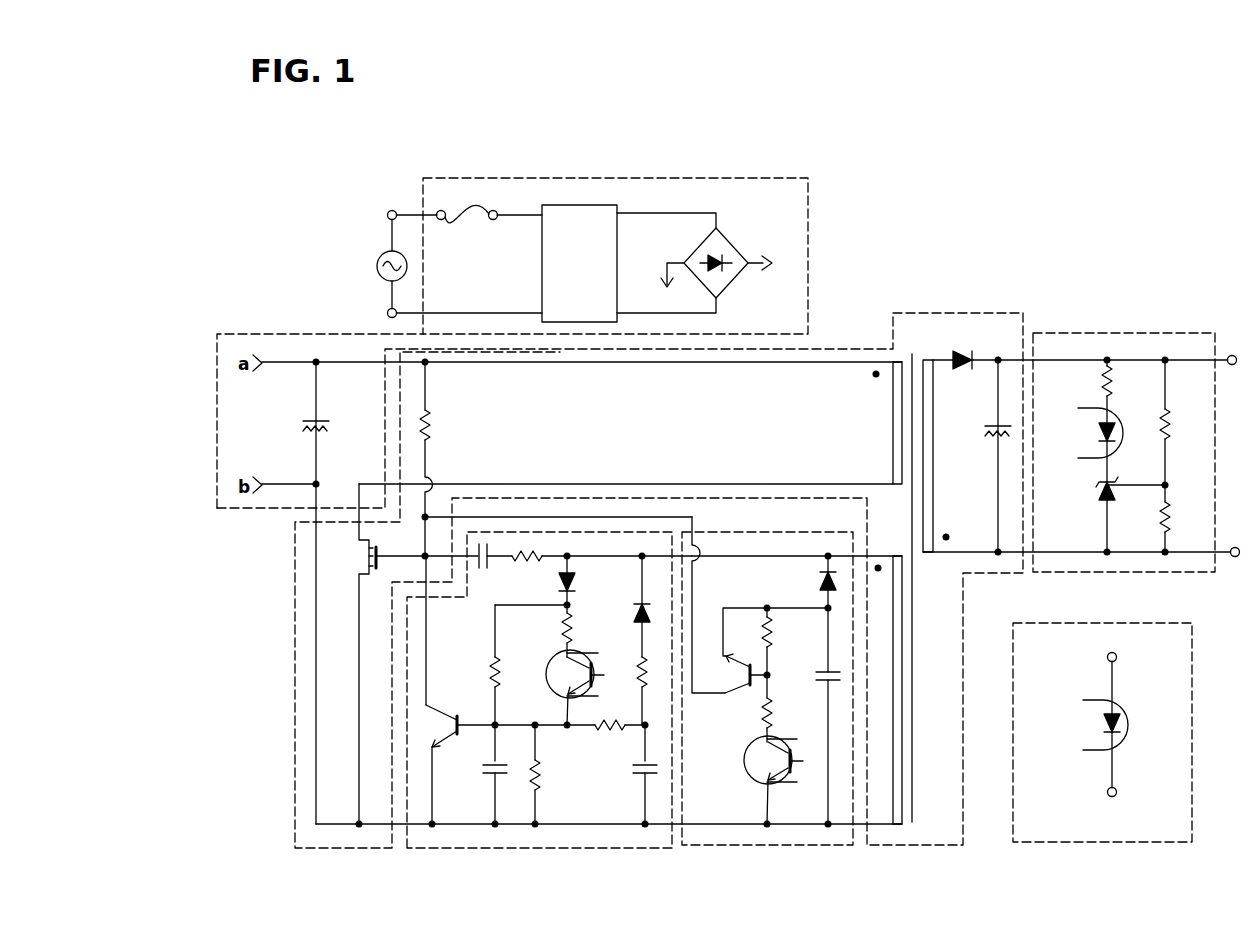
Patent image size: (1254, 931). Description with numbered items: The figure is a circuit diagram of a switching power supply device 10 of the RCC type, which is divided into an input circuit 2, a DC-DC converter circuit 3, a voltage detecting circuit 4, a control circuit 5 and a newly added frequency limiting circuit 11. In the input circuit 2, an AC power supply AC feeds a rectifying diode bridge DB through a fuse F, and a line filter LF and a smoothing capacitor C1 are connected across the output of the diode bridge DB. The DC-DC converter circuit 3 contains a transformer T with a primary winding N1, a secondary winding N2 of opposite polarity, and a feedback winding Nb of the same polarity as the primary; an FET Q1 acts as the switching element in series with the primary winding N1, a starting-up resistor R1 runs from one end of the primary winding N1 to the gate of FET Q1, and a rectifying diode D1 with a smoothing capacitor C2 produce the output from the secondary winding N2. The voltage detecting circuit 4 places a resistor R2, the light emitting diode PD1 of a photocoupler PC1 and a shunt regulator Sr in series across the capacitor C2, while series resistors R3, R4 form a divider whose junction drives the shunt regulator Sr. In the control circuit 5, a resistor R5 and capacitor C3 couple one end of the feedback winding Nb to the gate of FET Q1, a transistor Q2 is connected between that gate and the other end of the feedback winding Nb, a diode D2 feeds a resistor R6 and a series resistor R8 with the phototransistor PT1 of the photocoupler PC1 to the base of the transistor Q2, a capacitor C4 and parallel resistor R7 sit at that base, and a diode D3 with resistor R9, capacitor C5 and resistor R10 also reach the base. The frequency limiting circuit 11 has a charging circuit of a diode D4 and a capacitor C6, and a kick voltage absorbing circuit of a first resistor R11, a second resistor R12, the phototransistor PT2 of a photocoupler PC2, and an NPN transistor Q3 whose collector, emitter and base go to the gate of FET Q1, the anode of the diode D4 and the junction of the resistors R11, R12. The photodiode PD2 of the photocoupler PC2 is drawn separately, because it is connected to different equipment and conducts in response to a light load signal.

The input circuit 2 is at (641, 173).
The DC-DC converter circuit 3 is at (973, 310).
The voltage detecting circuit 4 is at (1149, 330).
The control circuit 5 is at (530, 878).
The switching power supply device 10 is at (849, 262).
The frequency limiting circuit 11 is at (776, 878).
The AC power supply AC is at (375, 264).
The fuse F is at (467, 229).
The line filter LF is at (579, 263).
The rectifying diode bridge DB is at (703, 252).
The smoothing capacitor C1 is at (327, 593).
The starting-up resistor R1 is at (444, 459).
The FET Q1 is at (375, 654).
The transformer T is at (910, 581).
The primary winding N1 is at (880, 423).
The secondary winding N2 is at (943, 456).
The feedback winding Nb is at (911, 690).
The rectifying diode D1 is at (965, 349).
The smoothing capacitor C2 is at (989, 456).
The photocoupler PC1 is at (804, 547).
The light emitting diode PD1 is at (1086, 445).
The phototransistor PT1 is at (575, 687).
The resistor R2 is at (1114, 384).
The resistor R3 is at (1172, 426).
The resistor R4 is at (1173, 521).
The shunt regulator Sr is at (1100, 480).
The capacitor C3 is at (480, 566).
The resistor R5 is at (527, 570).
The diode D2 is at (583, 580).
The diode D3 is at (626, 606).
The diode D4 is at (811, 582).
The resistor R6 is at (485, 668).
The resistor R7 is at (551, 774).
The resistor R8 is at (562, 646).
The resistor R9 is at (629, 686).
The resistor R10 is at (616, 740).
The capacitor C4 is at (480, 774).
The capacitor C5 is at (630, 774).
The transistor Q2 is at (468, 708).
The NPN transistor Q3 is at (760, 605).
The first resistor R11 is at (789, 641).
The second resistor R12 is at (789, 708).
The capacitor C6 is at (815, 716).
The photocoupler PC2 is at (897, 717).
The phototransistor PT2 is at (773, 780).
The photodiode PD2 is at (1091, 725).